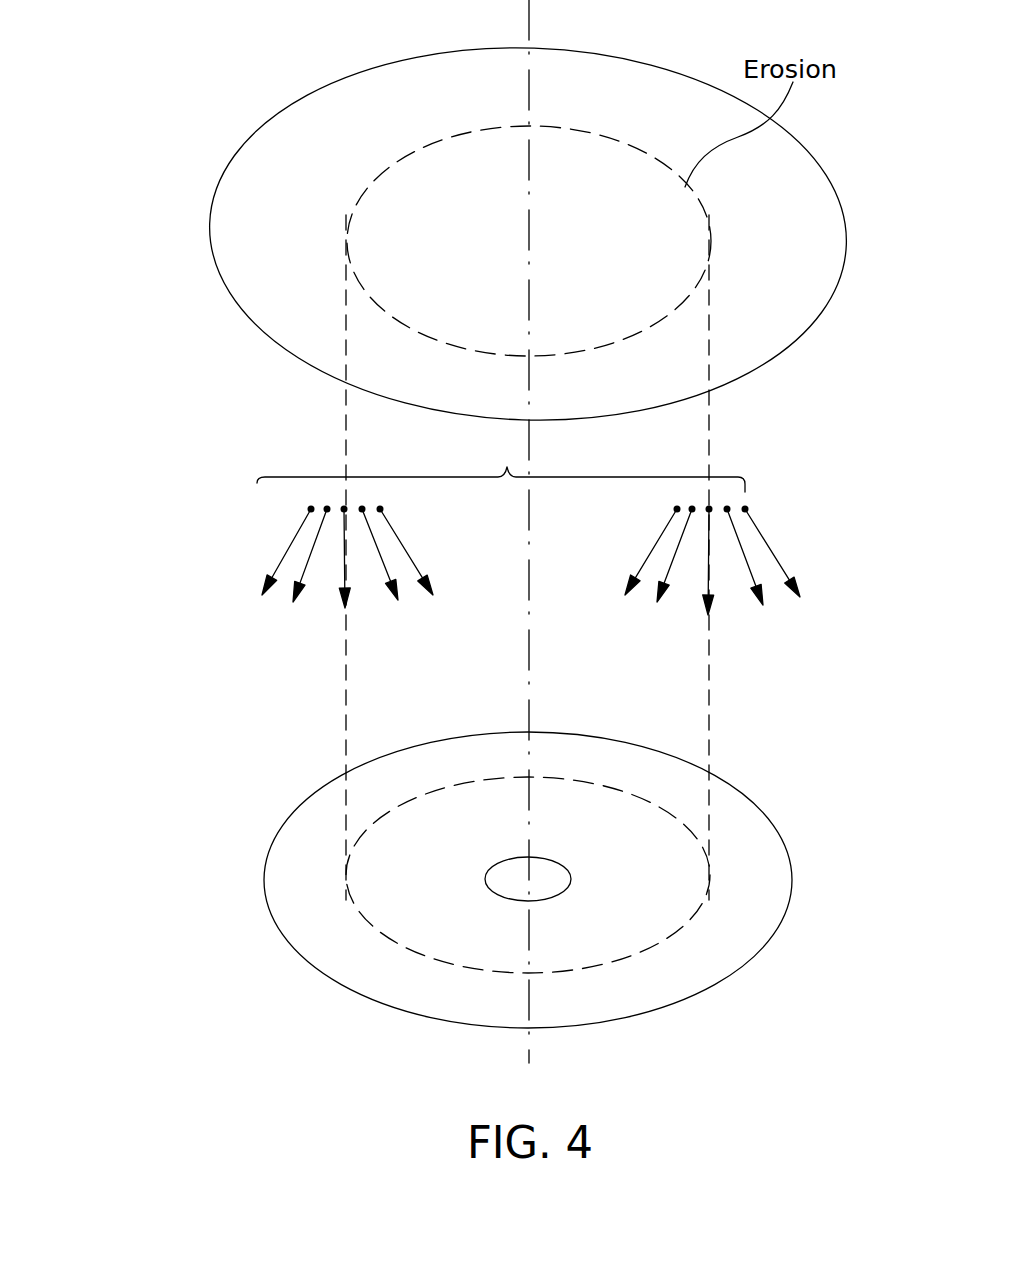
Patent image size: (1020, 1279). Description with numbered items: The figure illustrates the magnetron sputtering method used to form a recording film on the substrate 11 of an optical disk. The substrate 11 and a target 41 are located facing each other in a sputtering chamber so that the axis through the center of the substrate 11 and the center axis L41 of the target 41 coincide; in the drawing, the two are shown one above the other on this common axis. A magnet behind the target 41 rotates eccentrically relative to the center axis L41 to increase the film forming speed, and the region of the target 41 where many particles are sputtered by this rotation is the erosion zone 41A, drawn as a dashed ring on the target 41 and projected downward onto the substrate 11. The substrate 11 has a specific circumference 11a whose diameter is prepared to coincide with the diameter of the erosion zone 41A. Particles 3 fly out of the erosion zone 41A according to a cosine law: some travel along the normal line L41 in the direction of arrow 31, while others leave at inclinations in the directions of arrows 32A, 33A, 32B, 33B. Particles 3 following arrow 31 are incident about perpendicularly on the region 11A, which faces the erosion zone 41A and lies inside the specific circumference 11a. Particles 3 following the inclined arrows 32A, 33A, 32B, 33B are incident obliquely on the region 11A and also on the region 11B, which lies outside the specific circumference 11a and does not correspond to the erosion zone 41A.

The target 41 is at (250, 126).
The center axis of the target L41 is at (530, 25).
The erosion zone 41A is at (663, 218).
The particles 3 is at (503, 472).
The arrow 31 is at (345, 608).
The arrow 32A is at (398, 600).
The arrow 32B is at (293, 602).
The arrow 33A is at (433, 595).
The arrow 33B is at (262, 595).
The substrate 11 is at (320, 978).
The specific circumference 11a is at (353, 903).
The region facing the erosion zone 11A is at (640, 863).
The region outside the specific circumference 11B is at (742, 915).